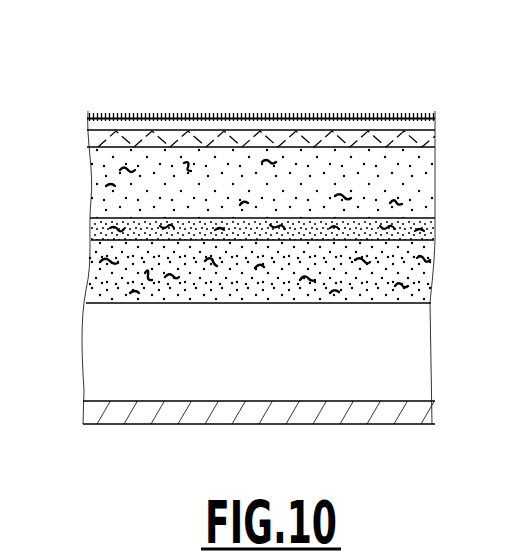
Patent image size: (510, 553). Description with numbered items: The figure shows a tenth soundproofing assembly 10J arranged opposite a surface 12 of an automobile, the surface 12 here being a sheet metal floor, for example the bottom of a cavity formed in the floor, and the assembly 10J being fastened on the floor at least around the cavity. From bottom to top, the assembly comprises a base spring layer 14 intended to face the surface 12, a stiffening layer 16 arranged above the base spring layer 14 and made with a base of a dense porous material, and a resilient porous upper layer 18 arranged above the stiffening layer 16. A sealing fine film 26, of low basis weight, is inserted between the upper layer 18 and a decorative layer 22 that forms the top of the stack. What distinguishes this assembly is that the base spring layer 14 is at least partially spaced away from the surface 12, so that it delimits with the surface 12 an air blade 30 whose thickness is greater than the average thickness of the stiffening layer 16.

The tenth soundproofing assembly 10J is at (230, 248).
The decorative layer 22 is at (188, 110).
The sealing fine film 26 is at (122, 131).
The resilient porous upper layer 18 is at (100, 182).
The stiffening layer 16 is at (98, 228).
The base spring layer 14 is at (110, 285).
The air blade 30 is at (110, 352).
The surface 12 is at (148, 401).